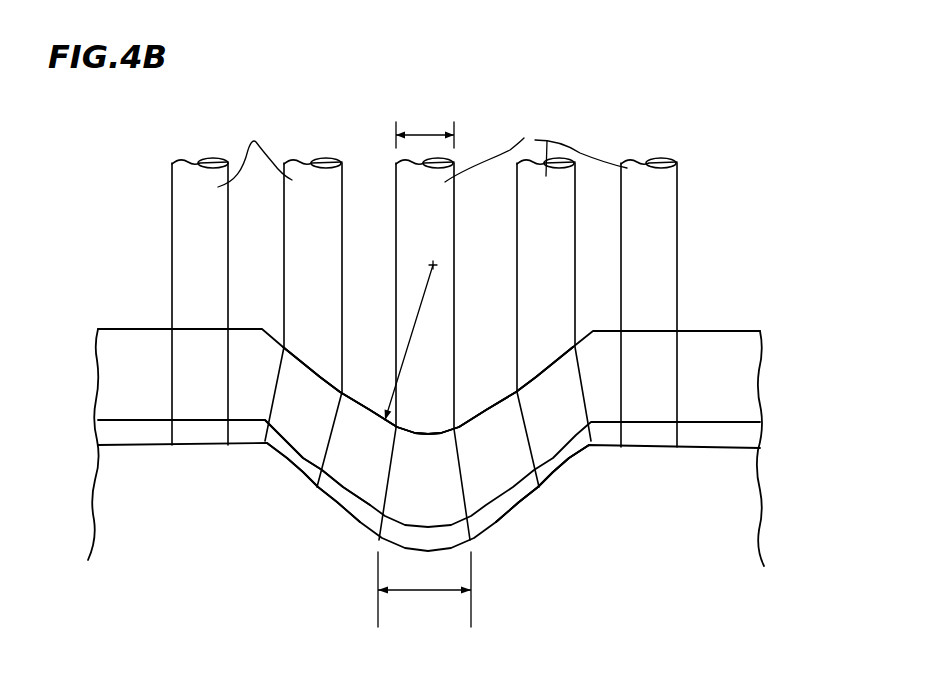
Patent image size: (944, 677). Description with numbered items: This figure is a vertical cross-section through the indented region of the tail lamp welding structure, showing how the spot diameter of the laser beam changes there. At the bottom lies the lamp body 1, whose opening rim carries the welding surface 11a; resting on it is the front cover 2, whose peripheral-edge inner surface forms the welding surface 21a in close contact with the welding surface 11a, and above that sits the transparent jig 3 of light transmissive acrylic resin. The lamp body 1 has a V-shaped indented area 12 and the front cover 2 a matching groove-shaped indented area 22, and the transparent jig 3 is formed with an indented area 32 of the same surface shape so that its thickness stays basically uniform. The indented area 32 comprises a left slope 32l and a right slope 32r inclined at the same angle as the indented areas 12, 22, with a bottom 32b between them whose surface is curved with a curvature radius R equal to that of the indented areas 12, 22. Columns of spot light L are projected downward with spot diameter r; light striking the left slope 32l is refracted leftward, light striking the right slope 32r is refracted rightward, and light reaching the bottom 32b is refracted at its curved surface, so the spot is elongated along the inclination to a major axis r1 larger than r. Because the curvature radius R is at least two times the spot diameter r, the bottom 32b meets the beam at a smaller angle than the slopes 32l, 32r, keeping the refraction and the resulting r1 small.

The lamp body 1 is at (732, 555).
The front cover 2 is at (743, 440).
The transparent jig 3 is at (745, 392).
The indented area 12 is at (351, 514).
The indented area 22 is at (345, 486).
The indented area 32 is at (488, 414).
The left slope 32l is at (323, 376).
The right slope 32r is at (530, 380).
The bottom 32b is at (454, 431).
The welding surface 11a is at (520, 506).
The welding surface 21a is at (582, 500).
The spot light L is at (422, 150).
The spot diameter r is at (425, 127).
The curvature radius R is at (403, 358).
The major axis of spot light r1 is at (424, 593).